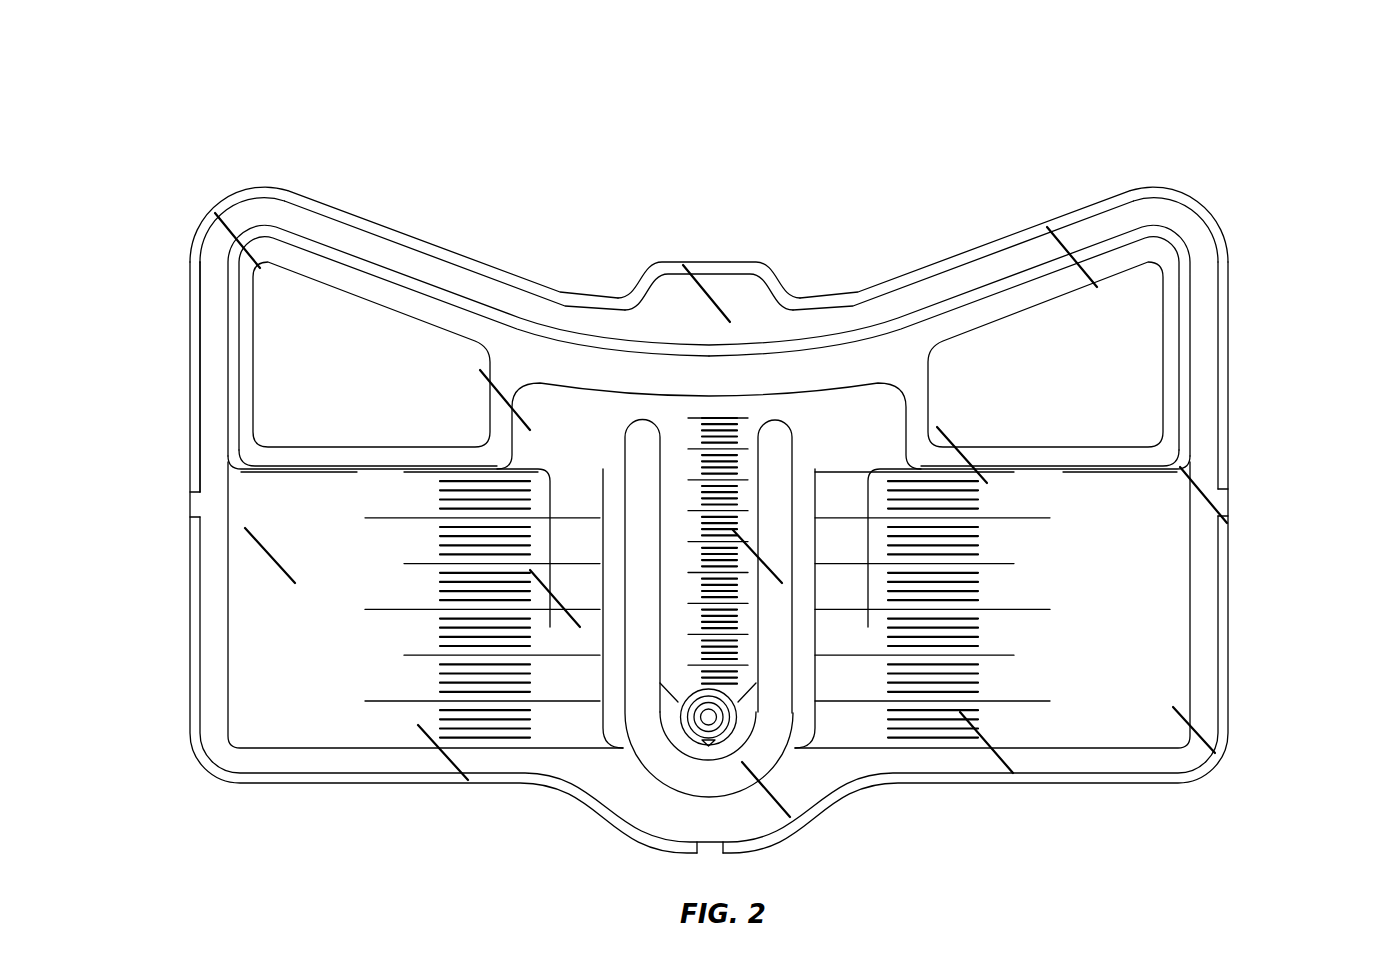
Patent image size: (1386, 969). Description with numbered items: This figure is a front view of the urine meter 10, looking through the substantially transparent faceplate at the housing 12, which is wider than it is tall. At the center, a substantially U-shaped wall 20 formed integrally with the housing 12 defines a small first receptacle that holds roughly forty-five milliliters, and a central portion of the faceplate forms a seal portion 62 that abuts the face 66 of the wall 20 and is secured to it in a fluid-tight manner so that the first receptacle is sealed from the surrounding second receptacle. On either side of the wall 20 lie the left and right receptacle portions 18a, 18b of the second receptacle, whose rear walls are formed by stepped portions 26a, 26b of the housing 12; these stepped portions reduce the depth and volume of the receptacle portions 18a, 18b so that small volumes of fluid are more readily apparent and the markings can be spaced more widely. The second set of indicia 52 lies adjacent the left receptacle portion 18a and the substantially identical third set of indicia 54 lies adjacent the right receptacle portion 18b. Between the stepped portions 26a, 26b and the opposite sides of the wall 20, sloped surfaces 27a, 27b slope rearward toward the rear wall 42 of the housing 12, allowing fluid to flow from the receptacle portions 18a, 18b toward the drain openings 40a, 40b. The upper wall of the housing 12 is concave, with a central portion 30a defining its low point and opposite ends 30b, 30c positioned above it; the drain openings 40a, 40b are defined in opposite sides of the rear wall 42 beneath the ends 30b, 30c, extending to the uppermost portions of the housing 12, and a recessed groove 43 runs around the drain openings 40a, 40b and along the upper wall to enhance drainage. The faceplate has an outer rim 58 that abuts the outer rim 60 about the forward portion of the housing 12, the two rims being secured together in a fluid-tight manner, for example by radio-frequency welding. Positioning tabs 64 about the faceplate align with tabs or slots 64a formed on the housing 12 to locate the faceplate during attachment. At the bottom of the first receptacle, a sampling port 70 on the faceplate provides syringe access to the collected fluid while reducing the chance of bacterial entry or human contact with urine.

The urine meter 10 is at (942, 57).
The housing 12 is at (532, 290).
The left receptacle portion 18a is at (278, 628).
The right receptacle portion 18b is at (1138, 620).
The U-shaped wall 20 is at (777, 418).
The stepped portion 26a is at (323, 463).
The stepped portion 26b is at (1077, 463).
The sloped surface 27a is at (608, 497).
The sloped surface 27b is at (843, 500).
The central portion 30a is at (722, 290).
The end of upper wall 30b is at (268, 223).
The end of upper wall 30c is at (1162, 225).
The drain opening 40a is at (1128, 333).
The drain opening 40b is at (287, 318).
The rear wall 42 is at (795, 460).
The recessed channel or groove 43 is at (452, 288).
The second set of indicia 52 is at (300, 676).
The third set of indicia 54 is at (1095, 645).
The outer rim 58 is at (1225, 359).
The outer rim 60 is at (211, 366).
The seal portion 62 is at (643, 618).
The positioning tab 64 is at (713, 853).
The tab or slot 64a is at (195, 506).
The face of wall 66 is at (872, 423).
The sampling port 70 is at (688, 728).